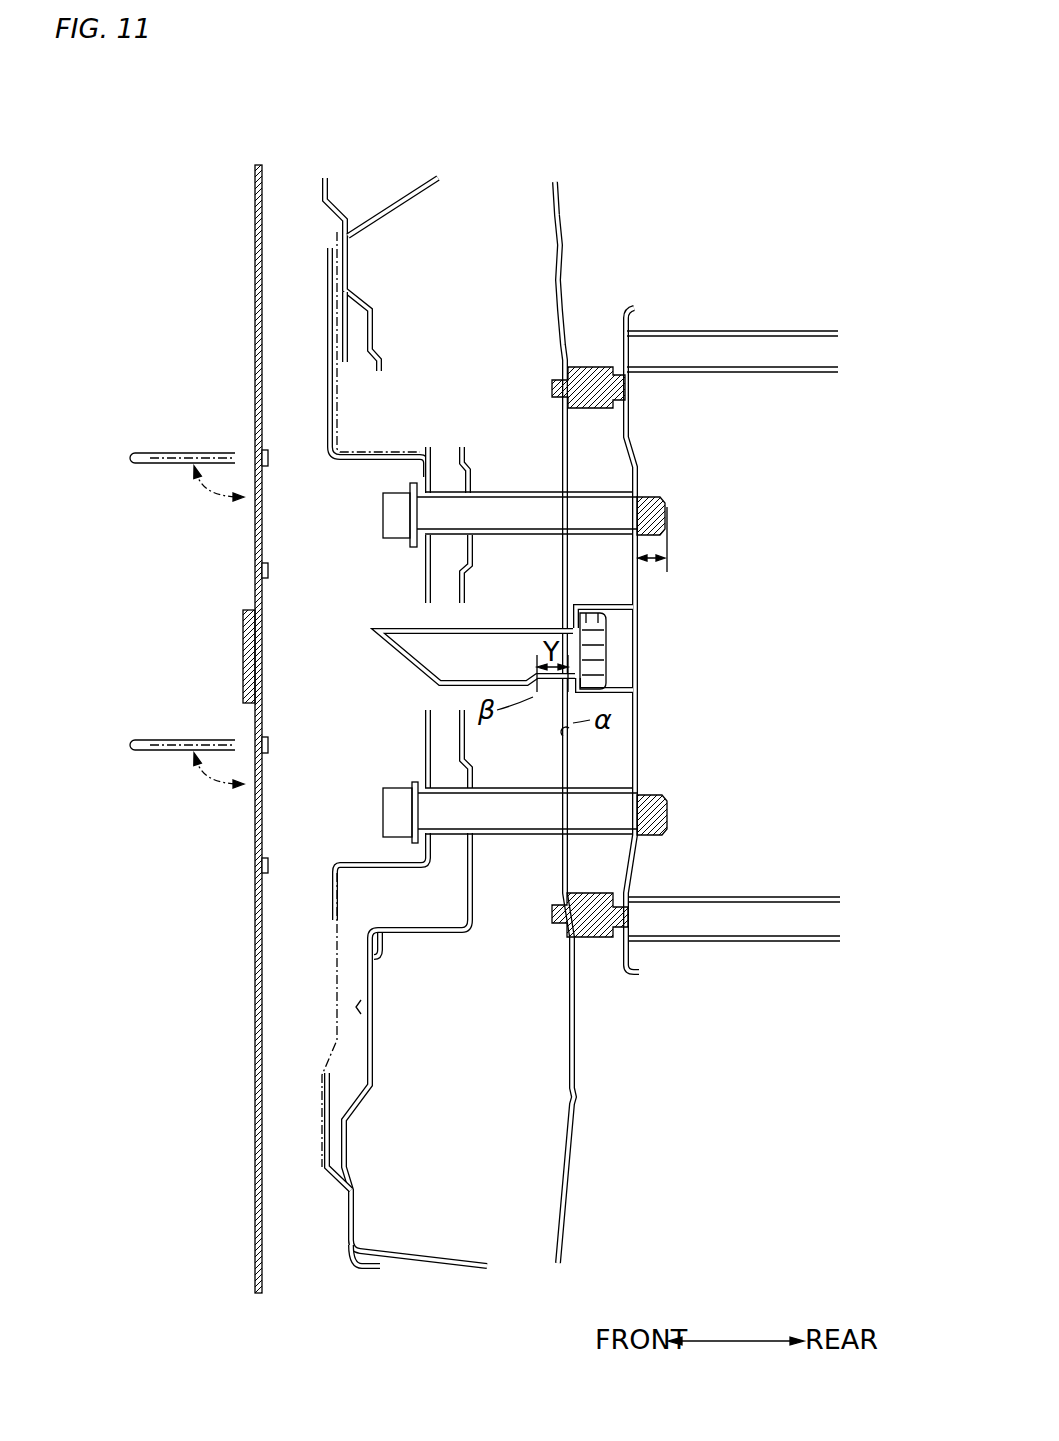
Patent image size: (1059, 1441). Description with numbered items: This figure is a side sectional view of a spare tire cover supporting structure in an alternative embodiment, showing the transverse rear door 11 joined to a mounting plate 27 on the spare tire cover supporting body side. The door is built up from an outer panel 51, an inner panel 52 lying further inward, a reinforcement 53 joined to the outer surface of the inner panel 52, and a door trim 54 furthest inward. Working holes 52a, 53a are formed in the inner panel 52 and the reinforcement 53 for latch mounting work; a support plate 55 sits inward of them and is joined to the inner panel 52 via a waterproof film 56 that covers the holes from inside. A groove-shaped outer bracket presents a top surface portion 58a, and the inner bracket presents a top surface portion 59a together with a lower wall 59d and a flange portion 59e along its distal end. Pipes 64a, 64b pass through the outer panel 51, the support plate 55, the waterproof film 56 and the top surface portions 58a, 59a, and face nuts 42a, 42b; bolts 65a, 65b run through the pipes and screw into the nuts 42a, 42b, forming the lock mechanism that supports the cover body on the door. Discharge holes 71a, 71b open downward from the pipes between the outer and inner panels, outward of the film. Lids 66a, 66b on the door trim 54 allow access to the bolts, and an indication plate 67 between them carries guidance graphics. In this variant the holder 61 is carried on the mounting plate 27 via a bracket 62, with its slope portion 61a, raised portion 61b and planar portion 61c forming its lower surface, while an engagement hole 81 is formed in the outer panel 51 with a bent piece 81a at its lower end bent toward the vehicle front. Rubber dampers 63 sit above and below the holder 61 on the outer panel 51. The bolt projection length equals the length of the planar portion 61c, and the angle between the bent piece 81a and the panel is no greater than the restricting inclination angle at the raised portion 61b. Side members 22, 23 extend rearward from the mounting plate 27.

The transverse rear door 11 is at (557, 150).
The side member 22 is at (773, 331).
The side member 23 is at (797, 897).
The mounting plate 27 is at (630, 312).
The nut 42a is at (670, 490).
The nut 42b is at (668, 797).
The outer panel 51 is at (560, 195).
The inner panel 52 is at (328, 182).
The working hole 52a is at (348, 362).
The reinforcement 53 is at (433, 178).
The working hole 53a is at (381, 368).
The door trim 54 is at (254, 246).
The support plate 55 is at (327, 258).
The waterproof film 56 is at (320, 1100).
The top surface portion 58a is at (560, 450).
The top surface portion 59a is at (463, 900).
The lower wall 59d is at (420, 927).
The flange portion 59e is at (357, 970).
The holder 61 is at (365, 622).
The slope portion 61a is at (397, 657).
The raised portion 61b is at (527, 690).
The planar portion 61c is at (537, 692).
The bracket 62 is at (638, 683).
The damper 63 is at (595, 366).
The pipe 64a is at (503, 490).
The pipe 64b is at (535, 705).
The bolt 65a is at (381, 515).
The bolt 65b is at (381, 805).
The lid 66a is at (185, 453).
The lid 66b is at (185, 740).
The indication plate 67 is at (243, 653).
The discharge hole 71a is at (502, 538).
The discharge hole 71b is at (497, 840).
The engagement hole 81 is at (567, 627).
The bent piece 81a is at (567, 735).